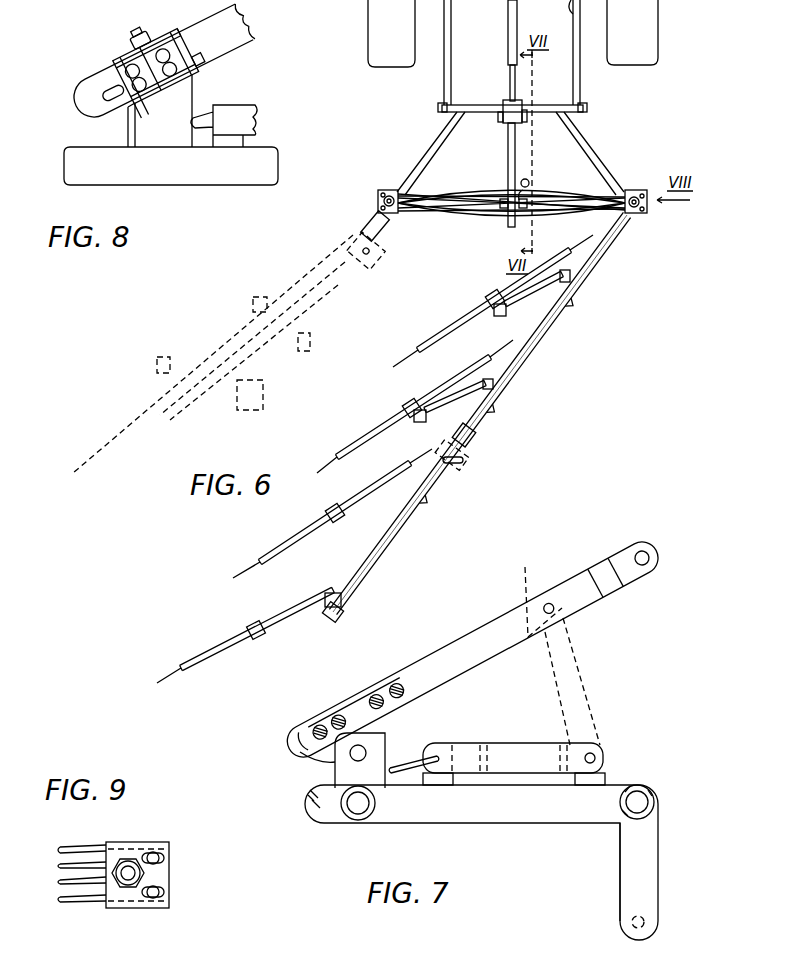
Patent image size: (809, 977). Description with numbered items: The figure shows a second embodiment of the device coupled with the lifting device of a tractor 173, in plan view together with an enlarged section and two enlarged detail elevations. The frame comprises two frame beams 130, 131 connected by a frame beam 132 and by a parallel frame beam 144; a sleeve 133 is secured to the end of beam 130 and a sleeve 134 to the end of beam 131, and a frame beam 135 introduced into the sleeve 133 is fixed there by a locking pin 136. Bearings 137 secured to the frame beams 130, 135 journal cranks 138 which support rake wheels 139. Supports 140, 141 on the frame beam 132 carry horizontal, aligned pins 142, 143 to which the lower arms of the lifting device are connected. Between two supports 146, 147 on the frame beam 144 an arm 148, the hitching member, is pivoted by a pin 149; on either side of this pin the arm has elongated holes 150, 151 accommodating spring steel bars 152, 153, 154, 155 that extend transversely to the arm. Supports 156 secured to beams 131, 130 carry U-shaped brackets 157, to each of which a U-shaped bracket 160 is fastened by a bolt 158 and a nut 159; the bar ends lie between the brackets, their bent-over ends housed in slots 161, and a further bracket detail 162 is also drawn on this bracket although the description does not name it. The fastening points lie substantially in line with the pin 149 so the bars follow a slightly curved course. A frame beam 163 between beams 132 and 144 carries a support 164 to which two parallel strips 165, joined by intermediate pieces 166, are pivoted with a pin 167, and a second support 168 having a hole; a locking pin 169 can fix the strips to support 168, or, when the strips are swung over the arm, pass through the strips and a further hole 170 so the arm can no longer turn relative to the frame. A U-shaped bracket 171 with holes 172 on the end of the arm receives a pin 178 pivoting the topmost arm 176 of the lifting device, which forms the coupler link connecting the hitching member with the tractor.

In FIG. 8, the frame beam 130 is at (195, 176).
In FIG. 6, the frame beam 130 is at (601, 246).
In FIG. 6, the frame beam 131 is at (425, 160).
In FIG. 7, the frame beam 131 is at (310, 815).
In FIG. 6, the frame beam 132 is at (524, 106).
In FIG. 7, the frame beam 132 is at (643, 788).
In FIG. 6, the sleeve 133 is at (474, 440).
In FIG. 6, the sleeve 134 is at (366, 221).
In FIG. 6, the frame beam 135 is at (302, 342).
In FIG. 6, the locking pin 136 is at (465, 461).
In FIG. 6, the bearings 137 is at (578, 302).
In FIG. 6, the cranks 138 is at (420, 418).
In FIG. 6, the rake wheels 139 is at (452, 333).
In FIG. 6, the support 140 is at (461, 105).
In FIG. 7, the support 140 is at (626, 842).
In FIG. 6, the support 141 is at (575, 96).
In FIG. 6, the pin 142 is at (440, 108).
In FIG. 7, the pin 142 is at (620, 922).
In FIG. 6, the pin 143 is at (586, 108).
In FIG. 6, the frame beam 144 is at (511, 238).
In FIG. 7, the frame beam 144 is at (352, 822).
In FIG. 6, the support 146 is at (503, 213).
In FIG. 8, the support 147 is at (128, 128).
In FIG. 6, the support 147 is at (525, 214).
In FIG. 7, the support 147 is at (335, 771).
In FIG. 8, the arm 148 is at (183, 77).
In FIG. 6, the arm 148 is at (516, 160).
In FIG. 7, the arm 148 is at (478, 621).
In FIG. 6, the pin 149 is at (528, 192).
In FIG. 7, the pin 149 is at (366, 750).
In FIG. 7, the elongated hole 150 is at (318, 724).
In FIG. 7, the elongated hole 151 is at (390, 680).
In FIG. 8, the spring steel bar 152 is at (138, 98).
In FIG. 6, the spring steel bar 152 is at (435, 212).
In FIG. 7, the spring steel bar 152 is at (300, 723).
In FIG. 8, the spring steel bar 153 is at (175, 82).
In FIG. 6, the spring steel bar 153 is at (468, 214).
In FIG. 7, the spring steel bar 153 is at (340, 715).
In FIG. 8, the spring steel bar 154 is at (115, 70).
In FIG. 6, the spring steel bar 154 is at (465, 195).
In FIG. 7, the spring steel bar 154 is at (378, 695).
In FIG. 8, the spring steel bar 155 is at (158, 38).
In FIG. 6, the spring steel bar 155 is at (480, 190).
In FIG. 7, the spring steel bar 155 is at (405, 688).
In FIG. 8, the supports 156 is at (178, 138).
In FIG. 8, the U-shaped bracket 157 is at (203, 64).
In FIG. 8, the bolt 158 is at (131, 33).
In FIG. 9, the bolt 158 is at (128, 882).
In FIG. 8, the nut 159 is at (126, 46).
In FIG. 8, the U-shaped bracket 160 is at (182, 33).
In FIG. 6, the U-shaped bracket 160 is at (383, 191).
In FIG. 9, the U-shaped bracket 160 is at (172, 880).
In FIG. 9, the slots 161 is at (163, 858).
In FIG. 9, the screw 162 is at (156, 850).
In FIG. 7, the frame beam 163 is at (500, 810).
In FIG. 7, the support 164 is at (600, 776).
In FIG. 8, the strips 165 is at (262, 112).
In FIG. 6, the strips 165 is at (530, 180).
In FIG. 7, the strips 165 is at (560, 702).
In FIG. 7, the intermediate pieces 166 is at (483, 745).
In FIG. 7, the pin 167 is at (598, 750).
In FIG. 7, the support 168 is at (437, 781).
In FIG. 7, the locking pin 169 is at (400, 770).
In FIG. 7, the hole 170 is at (548, 582).
In FIG. 6, the U-shaped bracket 171 is at (500, 122).
In FIG. 7, the U-shaped bracket 171 is at (612, 546).
In FIG. 7, the holes 172 is at (645, 572).
In FIG. 6, the tractor 173 is at (362, 50).
In FIG. 6, the topmost arm 176 is at (518, 32).
In FIG. 6, the pin 178 is at (528, 118).